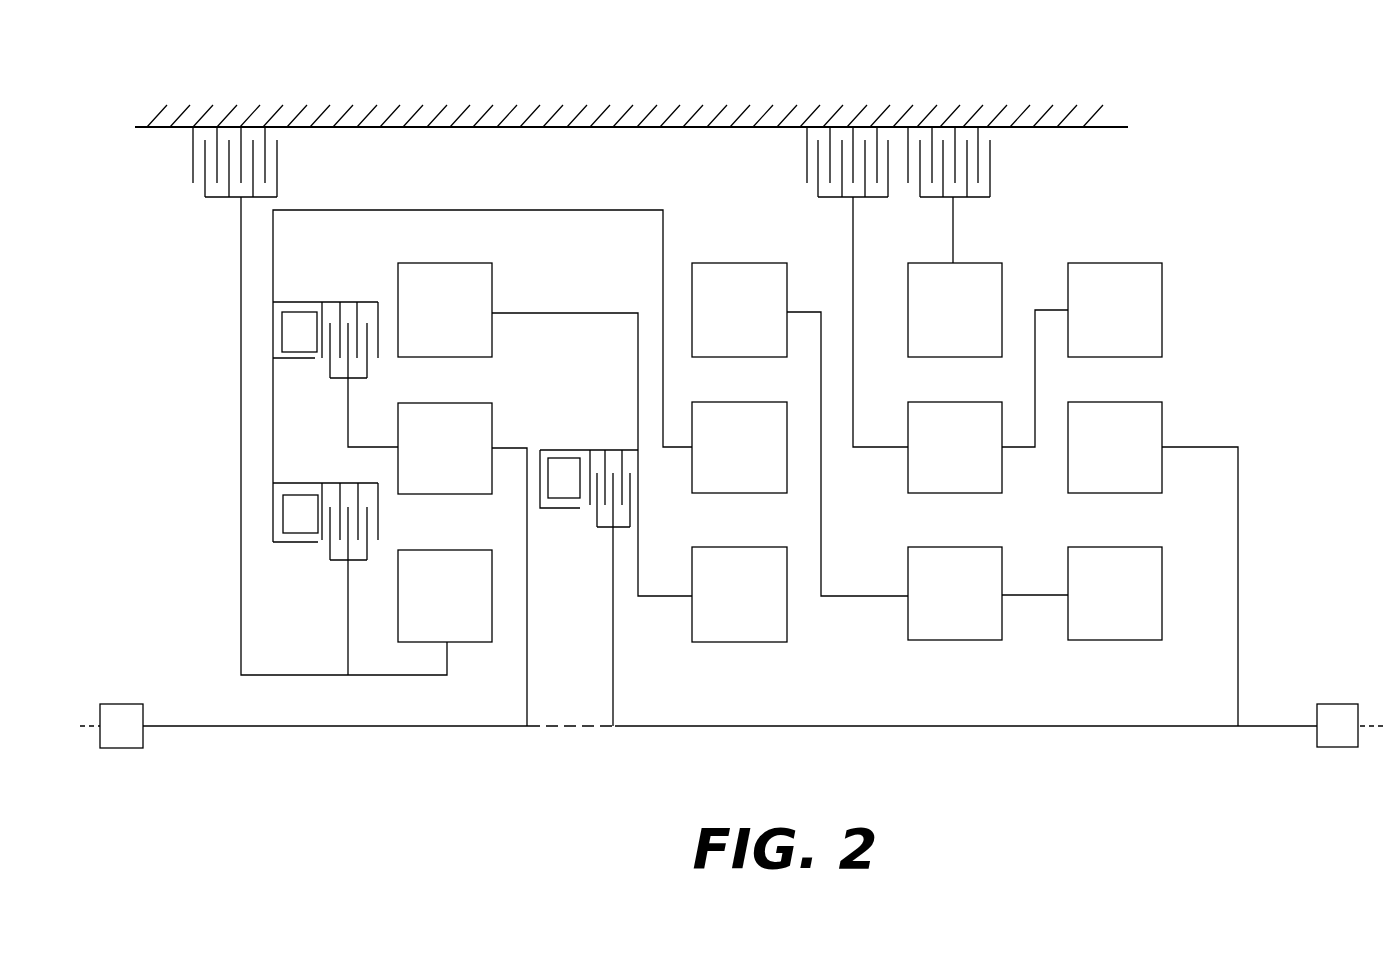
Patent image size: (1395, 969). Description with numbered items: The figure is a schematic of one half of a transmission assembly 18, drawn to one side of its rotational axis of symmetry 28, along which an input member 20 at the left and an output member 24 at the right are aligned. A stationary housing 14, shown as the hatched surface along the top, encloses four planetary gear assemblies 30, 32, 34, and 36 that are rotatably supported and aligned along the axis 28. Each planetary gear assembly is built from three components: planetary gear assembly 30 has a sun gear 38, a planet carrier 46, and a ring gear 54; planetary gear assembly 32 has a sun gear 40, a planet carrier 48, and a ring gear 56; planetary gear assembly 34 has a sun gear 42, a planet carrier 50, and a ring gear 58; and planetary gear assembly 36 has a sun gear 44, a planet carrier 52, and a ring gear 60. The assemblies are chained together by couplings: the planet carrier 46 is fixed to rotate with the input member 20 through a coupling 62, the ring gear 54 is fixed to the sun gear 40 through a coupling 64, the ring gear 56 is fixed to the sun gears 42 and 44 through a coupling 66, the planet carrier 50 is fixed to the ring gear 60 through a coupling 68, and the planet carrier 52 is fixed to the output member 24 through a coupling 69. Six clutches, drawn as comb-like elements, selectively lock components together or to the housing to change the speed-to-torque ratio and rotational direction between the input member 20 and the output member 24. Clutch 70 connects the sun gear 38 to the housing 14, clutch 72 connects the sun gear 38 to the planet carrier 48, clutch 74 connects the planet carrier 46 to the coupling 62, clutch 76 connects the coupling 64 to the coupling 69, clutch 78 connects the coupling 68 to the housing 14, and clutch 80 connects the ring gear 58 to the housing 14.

The stationary housing 14 is at (586, 126).
The transmission assembly 18 is at (1236, 160).
The input member 20 is at (133, 748).
The output member 24 is at (1323, 747).
The rotational axis of symmetry 28 is at (542, 732).
The planetary gear assembly 30 is at (466, 198).
The planetary gear assembly 32 is at (718, 212).
The planetary gear assembly 34 is at (1022, 244).
The planetary gear assembly 36 is at (1137, 218).
The sun gear 38 is at (445, 596).
The sun gear 40 is at (739, 594).
The sun gear 42 is at (955, 593).
The sun gear 44 is at (1115, 593).
The planet carrier 46 is at (445, 448).
The planet carrier 48 is at (739, 447).
The planet carrier 50 is at (955, 447).
The planet carrier 52 is at (1115, 447).
The ring gear 54 is at (445, 310).
The ring gear 56 is at (739, 310).
The ring gear 58 is at (955, 310).
The ring gear 60 is at (1115, 310).
The coupling 62 is at (528, 643).
The coupling 64 is at (571, 314).
The coupling 66 is at (821, 540).
The coupling 68 is at (1035, 370).
The coupling 69 is at (1238, 535).
The clutch 70 is at (200, 200).
The clutch 72 is at (318, 534).
The clutch 74 is at (315, 353).
The clutch 76 is at (580, 498).
The clutch 78 is at (818, 198).
The clutch 80 is at (920, 198).